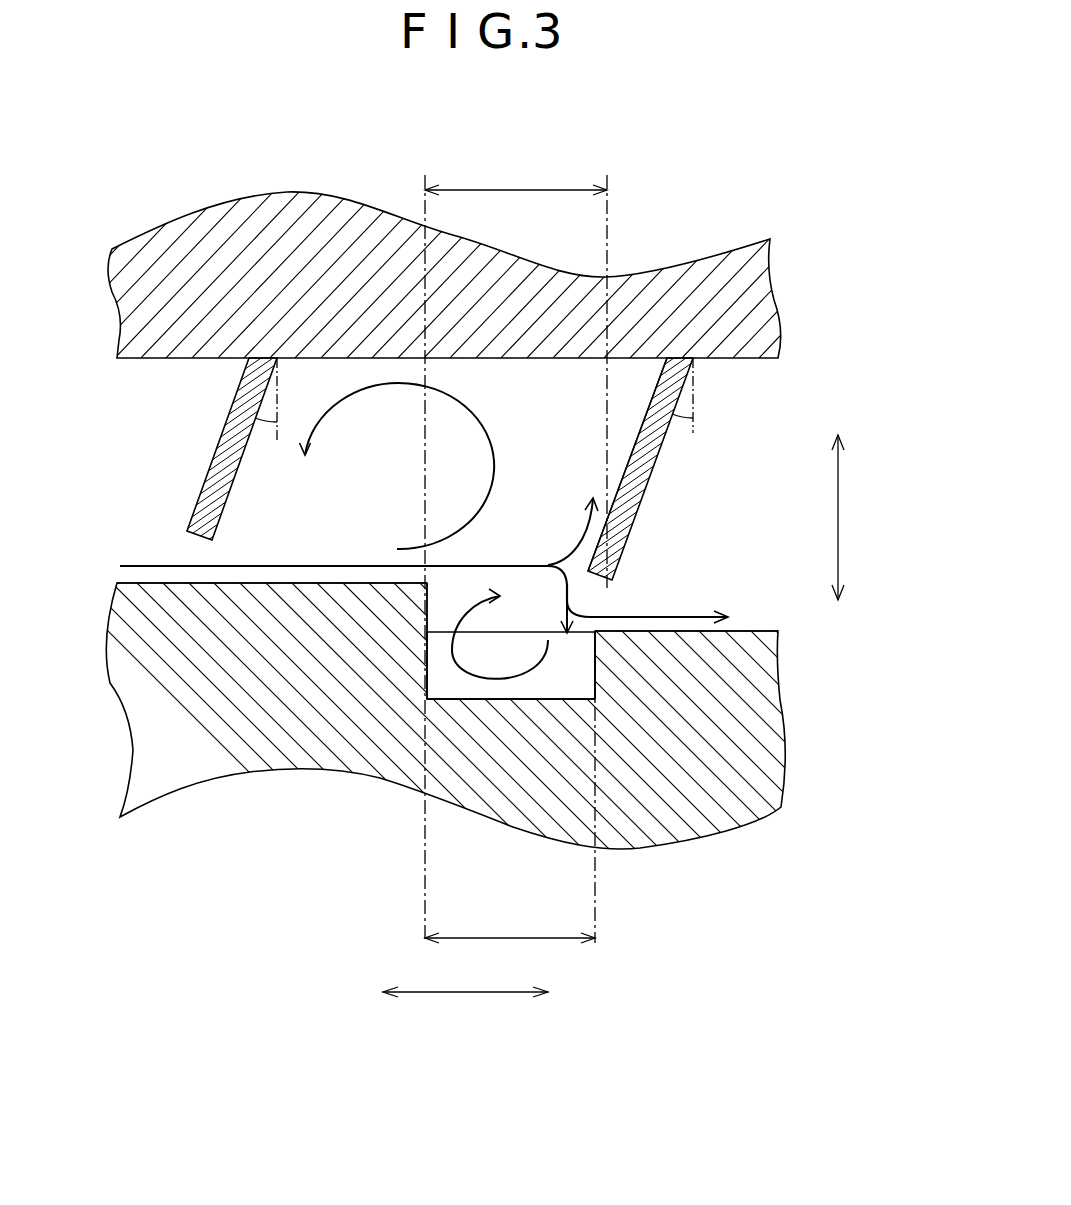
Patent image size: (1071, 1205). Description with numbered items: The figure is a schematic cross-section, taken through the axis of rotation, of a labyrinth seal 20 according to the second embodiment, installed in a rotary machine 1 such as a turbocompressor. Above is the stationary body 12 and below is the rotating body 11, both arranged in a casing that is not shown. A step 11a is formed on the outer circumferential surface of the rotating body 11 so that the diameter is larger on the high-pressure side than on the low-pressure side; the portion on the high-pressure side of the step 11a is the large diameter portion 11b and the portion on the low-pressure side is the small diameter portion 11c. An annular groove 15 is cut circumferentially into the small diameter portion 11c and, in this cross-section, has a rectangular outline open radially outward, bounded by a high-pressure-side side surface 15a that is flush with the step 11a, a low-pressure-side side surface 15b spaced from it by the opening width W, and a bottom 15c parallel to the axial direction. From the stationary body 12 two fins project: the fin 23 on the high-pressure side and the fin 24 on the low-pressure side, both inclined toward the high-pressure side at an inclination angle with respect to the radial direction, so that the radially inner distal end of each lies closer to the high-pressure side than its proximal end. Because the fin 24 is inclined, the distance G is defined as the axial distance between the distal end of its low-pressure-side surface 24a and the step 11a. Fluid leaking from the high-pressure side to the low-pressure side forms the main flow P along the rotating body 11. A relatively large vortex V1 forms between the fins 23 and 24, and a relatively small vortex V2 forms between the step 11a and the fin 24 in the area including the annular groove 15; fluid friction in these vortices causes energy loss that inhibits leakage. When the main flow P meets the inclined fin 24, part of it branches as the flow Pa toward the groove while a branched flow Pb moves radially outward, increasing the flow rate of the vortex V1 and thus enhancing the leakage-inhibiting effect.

The rotary machine 1 is at (85, 228).
The rotating body 11 is at (775, 742).
The step 11a is at (428, 605).
The large diameter portion 11b is at (336, 590).
The small diameter portion 11c is at (668, 638).
The stationary body 12 is at (778, 305).
The annular groove 15 is at (516, 622).
The high-pressure-side side surface 15a is at (428, 676).
The low-pressure-side side surface 15b is at (595, 676).
The bottom 15c is at (522, 699).
The labyrinth seal 20 is at (745, 398).
The fin on the high-pressure side 23 is at (235, 432).
The fin on the low-pressure side 24 is at (652, 455).
The low-pressure-side surface 24a is at (635, 520).
The distance G is at (516, 177).
The opening width W is at (510, 925).
The vortex V1 is at (378, 466).
The vortex V2 is at (496, 628).
The main flow P is at (424, 594).
The branched flow Pa is at (572, 634).
The branched flow Pb is at (573, 518).